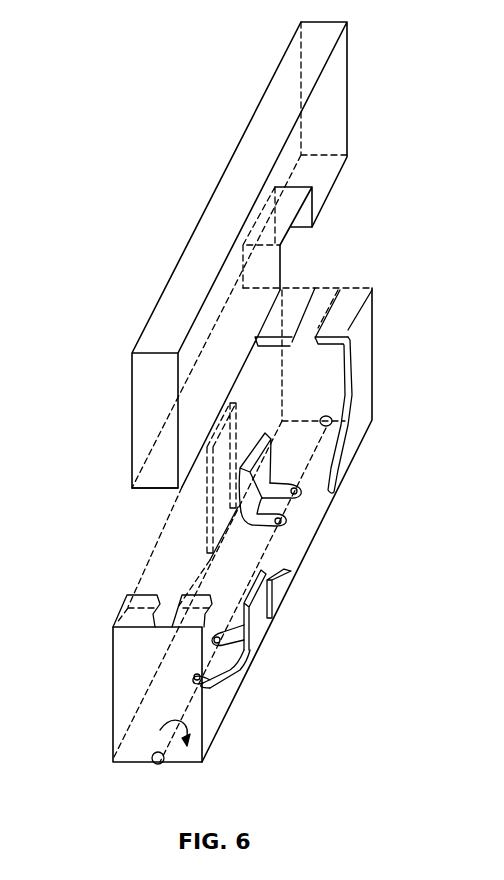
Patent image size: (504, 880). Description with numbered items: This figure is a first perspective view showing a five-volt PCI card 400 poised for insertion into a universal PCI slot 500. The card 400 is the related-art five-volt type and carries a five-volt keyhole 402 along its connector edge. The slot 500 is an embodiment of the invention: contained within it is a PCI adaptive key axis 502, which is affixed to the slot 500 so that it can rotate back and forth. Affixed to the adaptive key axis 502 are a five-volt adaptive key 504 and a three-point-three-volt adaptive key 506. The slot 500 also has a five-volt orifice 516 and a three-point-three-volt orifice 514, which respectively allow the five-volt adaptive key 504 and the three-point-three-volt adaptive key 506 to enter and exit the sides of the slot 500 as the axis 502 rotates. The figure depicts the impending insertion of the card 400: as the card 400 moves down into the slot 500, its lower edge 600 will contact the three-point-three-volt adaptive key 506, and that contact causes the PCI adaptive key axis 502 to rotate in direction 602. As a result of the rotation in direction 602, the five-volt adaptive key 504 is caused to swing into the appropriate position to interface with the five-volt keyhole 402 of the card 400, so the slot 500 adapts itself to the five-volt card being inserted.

The 5V PCI card 400 is at (348, 90).
The 5V keyhole 402 is at (306, 237).
The universal PCI slot 500 is at (128, 595).
The PCI adaptive key axis 502 is at (165, 743).
The 5V adaptive key 504 is at (258, 481).
The 3.3V adaptive key 506 is at (252, 620).
The 3.3V orifice 514 is at (274, 586).
The 5V orifice 516 is at (210, 500).
The lower edge 600 is at (150, 493).
The direction 602 is at (175, 722).